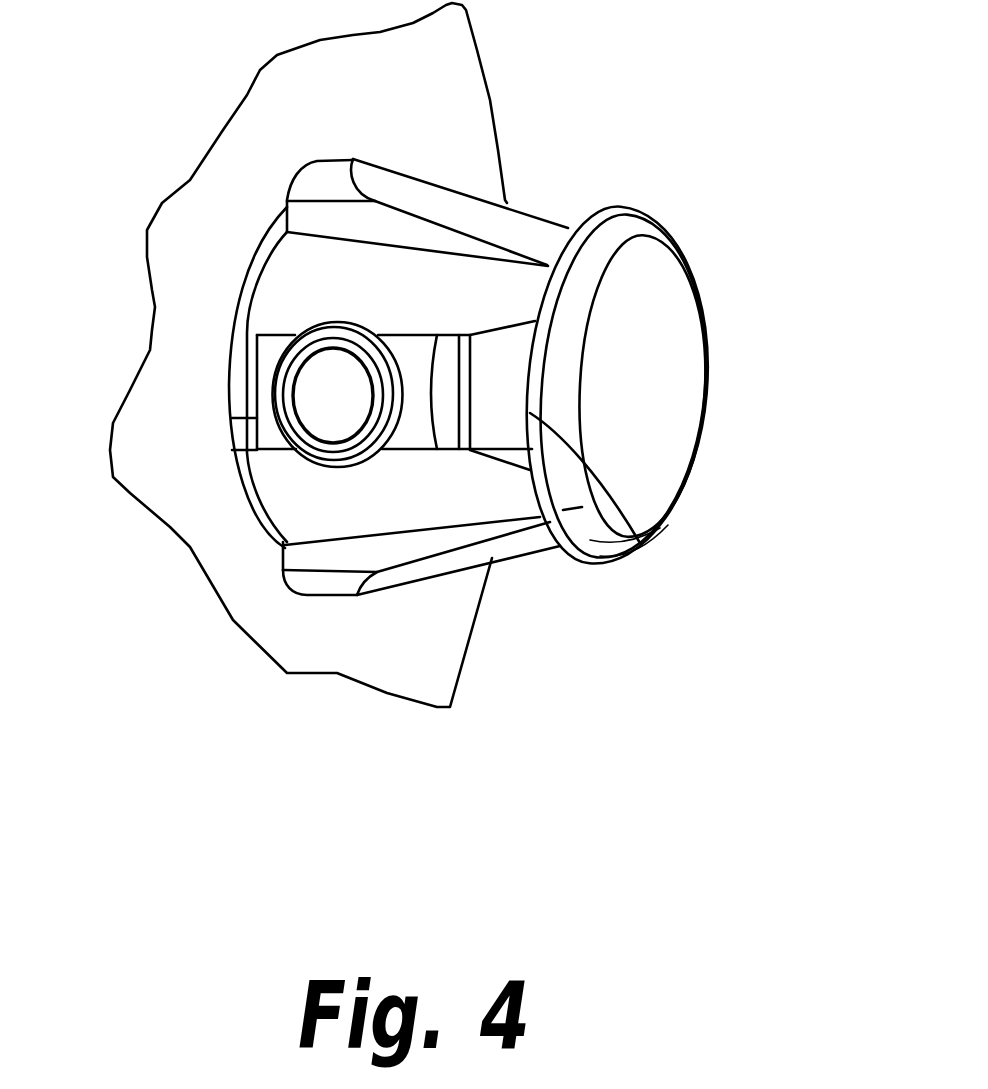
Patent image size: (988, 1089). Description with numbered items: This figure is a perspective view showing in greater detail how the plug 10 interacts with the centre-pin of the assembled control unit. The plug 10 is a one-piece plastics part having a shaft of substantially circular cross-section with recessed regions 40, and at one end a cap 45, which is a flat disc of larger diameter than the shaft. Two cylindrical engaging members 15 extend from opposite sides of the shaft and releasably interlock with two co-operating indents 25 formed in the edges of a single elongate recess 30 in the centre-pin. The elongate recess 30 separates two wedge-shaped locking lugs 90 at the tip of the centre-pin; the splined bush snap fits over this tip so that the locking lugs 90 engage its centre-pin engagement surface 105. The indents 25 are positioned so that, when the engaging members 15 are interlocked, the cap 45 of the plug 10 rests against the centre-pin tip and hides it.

The plug 10 is at (686, 225).
The engaging members 15 is at (330, 418).
The indents 25 is at (330, 324).
The elongate recess 30 is at (240, 381).
The recessed regions 40 is at (500, 390).
The cap 45 is at (670, 371).
The locking lugs 90 is at (523, 227).
The centre-pin engagement surface 105 is at (347, 102).